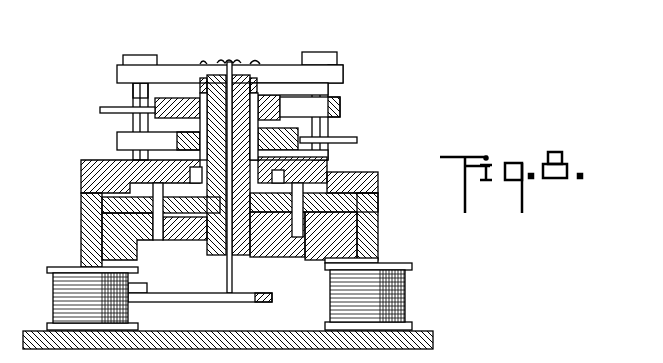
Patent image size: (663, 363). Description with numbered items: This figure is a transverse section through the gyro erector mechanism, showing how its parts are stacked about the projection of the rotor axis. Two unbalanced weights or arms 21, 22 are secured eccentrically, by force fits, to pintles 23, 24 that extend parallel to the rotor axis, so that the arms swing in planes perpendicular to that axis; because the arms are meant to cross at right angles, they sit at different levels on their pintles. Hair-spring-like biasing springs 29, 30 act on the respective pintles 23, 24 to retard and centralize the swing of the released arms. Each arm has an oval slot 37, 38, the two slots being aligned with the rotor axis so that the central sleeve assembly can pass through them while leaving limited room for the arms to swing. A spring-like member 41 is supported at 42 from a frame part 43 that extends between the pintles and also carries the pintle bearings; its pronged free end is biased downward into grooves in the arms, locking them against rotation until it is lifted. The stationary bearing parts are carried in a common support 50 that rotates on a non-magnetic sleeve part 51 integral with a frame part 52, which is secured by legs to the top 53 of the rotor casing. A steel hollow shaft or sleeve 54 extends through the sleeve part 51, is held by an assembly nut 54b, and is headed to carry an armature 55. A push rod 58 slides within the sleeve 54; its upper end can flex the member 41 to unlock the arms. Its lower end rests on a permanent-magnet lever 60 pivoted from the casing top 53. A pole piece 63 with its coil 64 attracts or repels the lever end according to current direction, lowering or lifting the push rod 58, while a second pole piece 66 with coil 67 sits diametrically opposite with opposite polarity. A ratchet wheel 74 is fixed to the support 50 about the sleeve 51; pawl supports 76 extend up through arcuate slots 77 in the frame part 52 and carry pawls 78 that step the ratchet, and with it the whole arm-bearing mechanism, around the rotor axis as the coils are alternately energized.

The weight 21 is at (118, 140).
The weight 22 is at (340, 110).
The pintle 23 is at (133, 92).
The pintle 24 is at (328, 90).
The biasing spring 29 is at (100, 110).
The biasing spring 30 is at (350, 140).
The slot 37 is at (268, 130).
The slot 38 is at (275, 100).
The spring-like member 41 is at (236, 68).
The support point 42 is at (205, 62).
The frame part 43 is at (305, 75).
The common support 50 is at (378, 200).
The sleeve part 51 is at (200, 88).
The frame part 52 is at (378, 222).
The top of the rotor casing 53 is at (433, 340).
The hollow shaft or sleeve 54 is at (195, 242).
The assembly nut 54b is at (258, 100).
The armature 55 is at (380, 235).
The push rod 58 is at (226, 72).
The lever 60 is at (195, 300).
The pole piece 63 is at (82, 245).
The coil 64 is at (60, 300).
The second pole piece 66 is at (380, 254).
The coil 67 is at (412, 295).
The ratchet wheel 74 is at (275, 215).
The pawl support 76 is at (118, 228).
The arcuate slot 77 is at (150, 206).
The pawl 78 is at (135, 172).